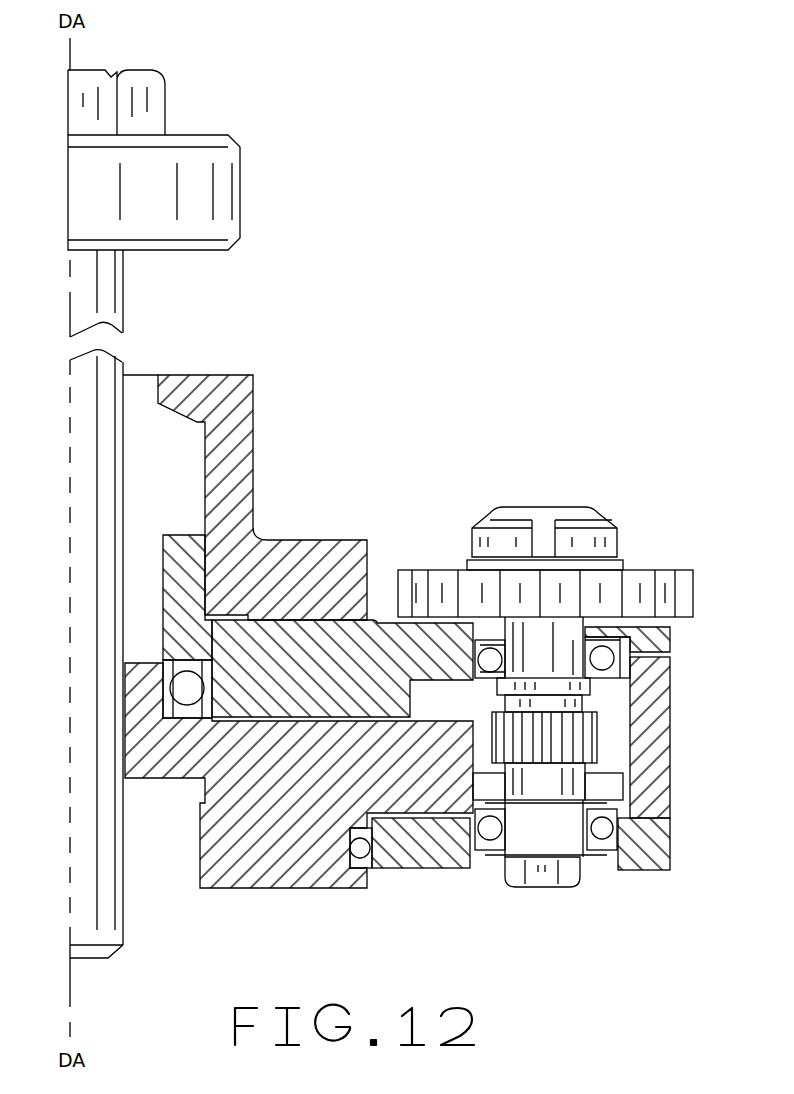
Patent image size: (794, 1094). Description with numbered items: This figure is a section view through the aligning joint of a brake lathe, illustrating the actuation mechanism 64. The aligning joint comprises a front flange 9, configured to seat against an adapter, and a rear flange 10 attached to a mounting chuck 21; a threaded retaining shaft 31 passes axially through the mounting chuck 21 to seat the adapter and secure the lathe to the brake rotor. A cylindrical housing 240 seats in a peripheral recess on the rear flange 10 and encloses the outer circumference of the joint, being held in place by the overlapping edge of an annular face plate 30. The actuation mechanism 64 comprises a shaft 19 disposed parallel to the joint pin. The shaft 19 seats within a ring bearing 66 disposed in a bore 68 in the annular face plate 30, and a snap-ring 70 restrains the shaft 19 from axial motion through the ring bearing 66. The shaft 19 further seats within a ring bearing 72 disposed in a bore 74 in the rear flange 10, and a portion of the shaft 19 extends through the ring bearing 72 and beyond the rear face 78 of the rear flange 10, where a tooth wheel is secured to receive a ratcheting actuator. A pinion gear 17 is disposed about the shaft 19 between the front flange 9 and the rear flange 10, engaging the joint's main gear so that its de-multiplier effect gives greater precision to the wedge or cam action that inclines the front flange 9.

The front flange 9 is at (258, 848).
The rear flange 10 is at (331, 660).
The pinion gear 17 is at (563, 735).
The shaft 19 is at (553, 782).
The mounting chuck 21 is at (233, 397).
The cylindrical housing 240 is at (652, 747).
The annular face plate 30 is at (423, 848).
The threaded retaining shaft 31 is at (83, 272).
The actuation mechanism 64 is at (628, 510).
The ring bearing 66 is at (604, 833).
The bore 68 is at (467, 856).
The snap-ring 70 is at (592, 855).
The ring bearing 72 is at (597, 655).
The bore 74 is at (474, 658).
The rear face 78 is at (388, 623).